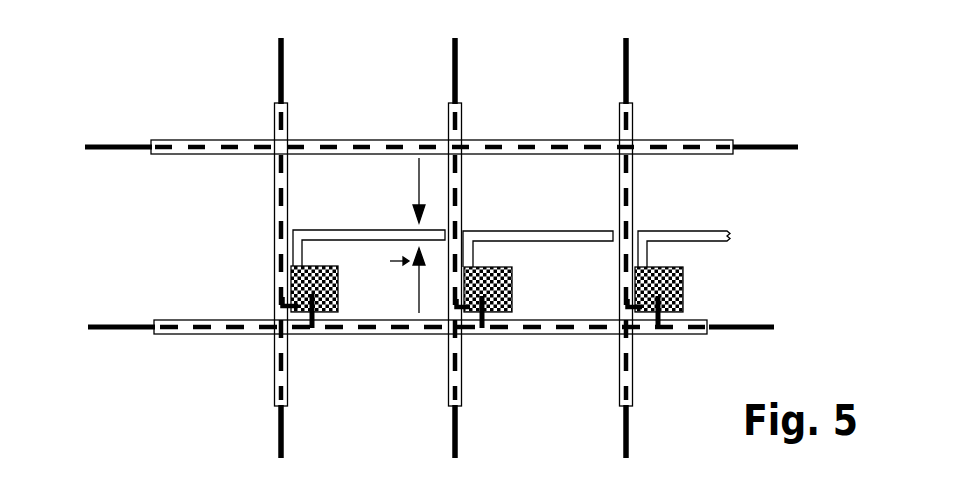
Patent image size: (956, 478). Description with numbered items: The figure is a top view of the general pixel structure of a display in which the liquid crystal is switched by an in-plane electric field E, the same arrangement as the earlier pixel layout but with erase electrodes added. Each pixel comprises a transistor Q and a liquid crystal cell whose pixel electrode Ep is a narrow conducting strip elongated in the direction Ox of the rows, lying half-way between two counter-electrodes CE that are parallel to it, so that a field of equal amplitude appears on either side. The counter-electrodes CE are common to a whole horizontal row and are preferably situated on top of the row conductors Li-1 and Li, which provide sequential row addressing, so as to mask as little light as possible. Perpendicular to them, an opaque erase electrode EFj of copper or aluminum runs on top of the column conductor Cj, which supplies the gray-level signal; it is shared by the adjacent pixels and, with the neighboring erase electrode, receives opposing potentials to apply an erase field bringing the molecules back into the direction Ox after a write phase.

The column conductor Cj is at (263, 247).
The erase electrode EFj is at (287, 125).
The row conductor Li-1 is at (436, 148).
The row conductor Li is at (427, 314).
The pixel electrode Ep is at (373, 235).
The transistor Q is at (291, 289).
The counter-electrode CE is at (392, 334).
The electric field E is at (407, 235).